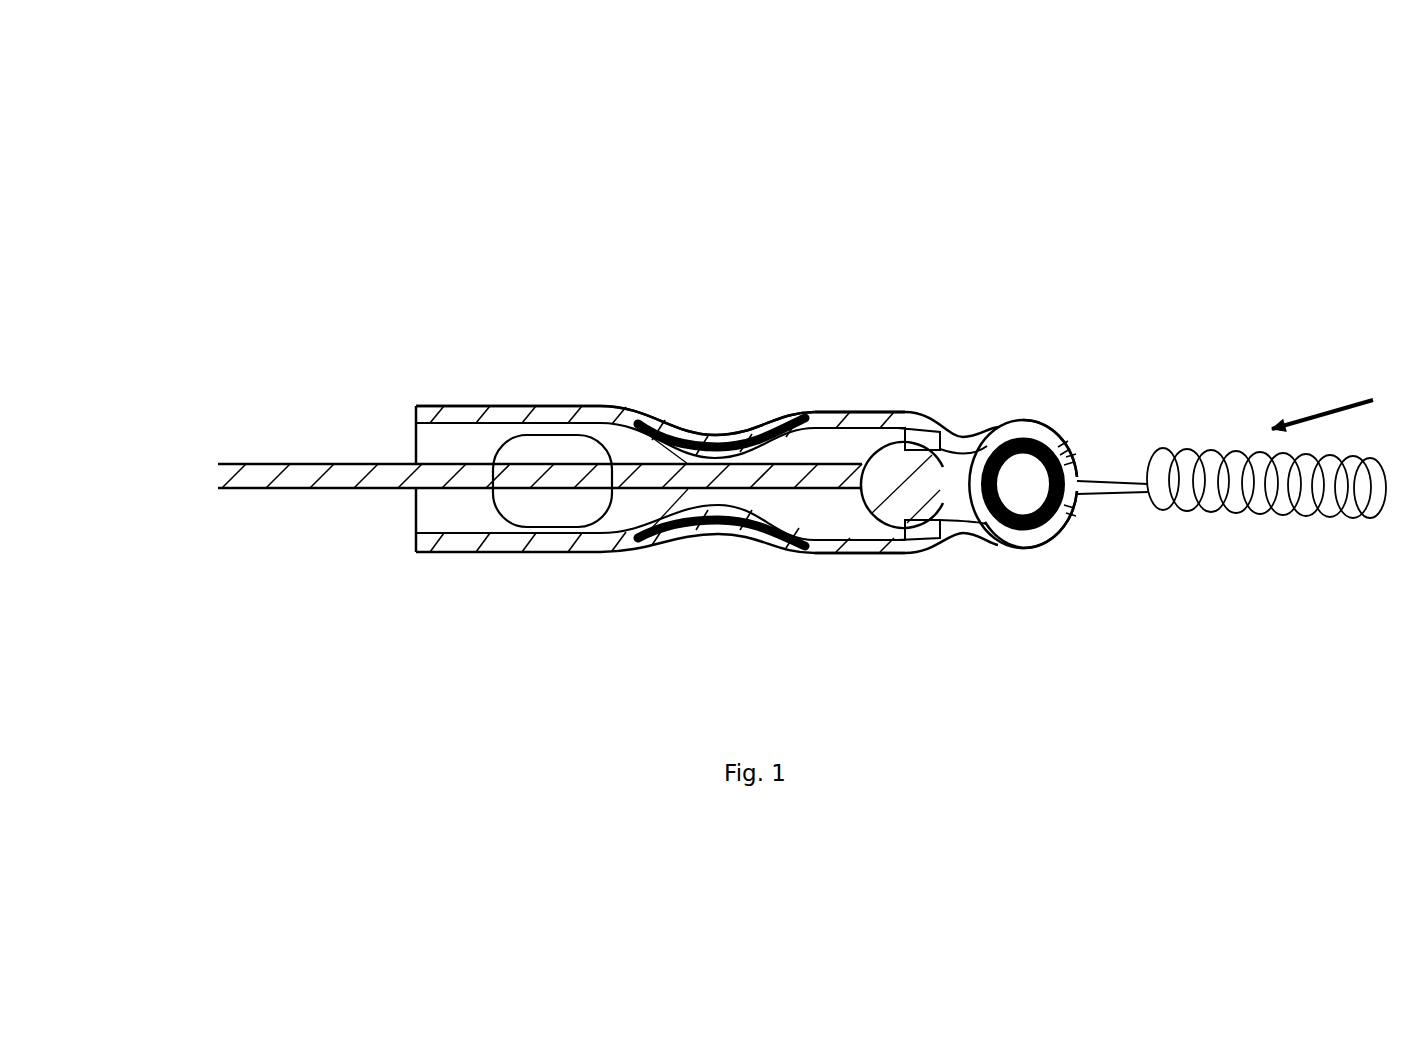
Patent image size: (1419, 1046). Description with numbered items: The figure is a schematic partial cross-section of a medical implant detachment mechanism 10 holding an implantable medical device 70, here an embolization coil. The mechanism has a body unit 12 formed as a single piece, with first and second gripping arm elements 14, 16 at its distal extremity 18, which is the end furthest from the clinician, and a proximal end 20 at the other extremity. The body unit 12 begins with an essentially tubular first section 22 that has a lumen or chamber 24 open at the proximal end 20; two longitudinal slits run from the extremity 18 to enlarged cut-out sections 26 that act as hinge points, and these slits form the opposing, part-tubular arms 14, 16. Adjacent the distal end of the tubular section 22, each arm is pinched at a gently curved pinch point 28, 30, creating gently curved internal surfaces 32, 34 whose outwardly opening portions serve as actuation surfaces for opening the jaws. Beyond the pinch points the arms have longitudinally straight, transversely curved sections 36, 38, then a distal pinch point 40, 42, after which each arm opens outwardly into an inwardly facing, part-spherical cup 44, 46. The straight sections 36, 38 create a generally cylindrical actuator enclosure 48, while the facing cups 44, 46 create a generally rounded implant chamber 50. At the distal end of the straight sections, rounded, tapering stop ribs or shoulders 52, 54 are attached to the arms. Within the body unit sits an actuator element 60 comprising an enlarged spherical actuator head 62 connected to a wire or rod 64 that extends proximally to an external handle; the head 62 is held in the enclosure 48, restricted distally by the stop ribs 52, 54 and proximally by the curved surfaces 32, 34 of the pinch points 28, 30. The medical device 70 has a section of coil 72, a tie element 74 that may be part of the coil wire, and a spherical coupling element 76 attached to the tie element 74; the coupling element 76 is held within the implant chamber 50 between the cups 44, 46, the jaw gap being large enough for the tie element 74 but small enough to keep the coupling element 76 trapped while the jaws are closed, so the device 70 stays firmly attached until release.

The medical implant detachment mechanism 10 is at (1024, 254).
The body unit 12 is at (716, 408).
The first gripping arm element 14 is at (1036, 393).
The second gripping arm element 16 is at (1002, 554).
The distal extremity 18 is at (1078, 537).
The proximal end 20 is at (412, 560).
The first tubular section 22 is at (596, 406).
The lumen or chamber 24 is at (446, 440).
The enlarged cut-out section 26 is at (572, 509).
The pinch point 28 is at (747, 425).
The pinch point 30 is at (715, 534).
The curved internal surface 32 is at (806, 412).
The curved internal surface 34 is at (789, 522).
The straight section 36 is at (898, 412).
The straight section 38 is at (898, 550).
The distal pinch point 40 is at (977, 432).
The distal pinch point 42 is at (962, 537).
The inwardly facing cup 44 is at (1052, 418).
The inwardly facing cup 46 is at (1038, 542).
The actuator enclosure 48 is at (833, 517).
The implant chamber 50 is at (1036, 498).
The stop rib or shoulder 52 is at (926, 422).
The stop rib or shoulder 54 is at (920, 534).
The actuator element 60 is at (295, 492).
The actuator head 62 is at (932, 497).
The wire or rod 64 is at (222, 488).
The implantable medical device 70 is at (1332, 400).
The section of coil 72 is at (1336, 514).
The tie element 74 is at (1118, 478).
The coupling element 76 is at (1053, 423).